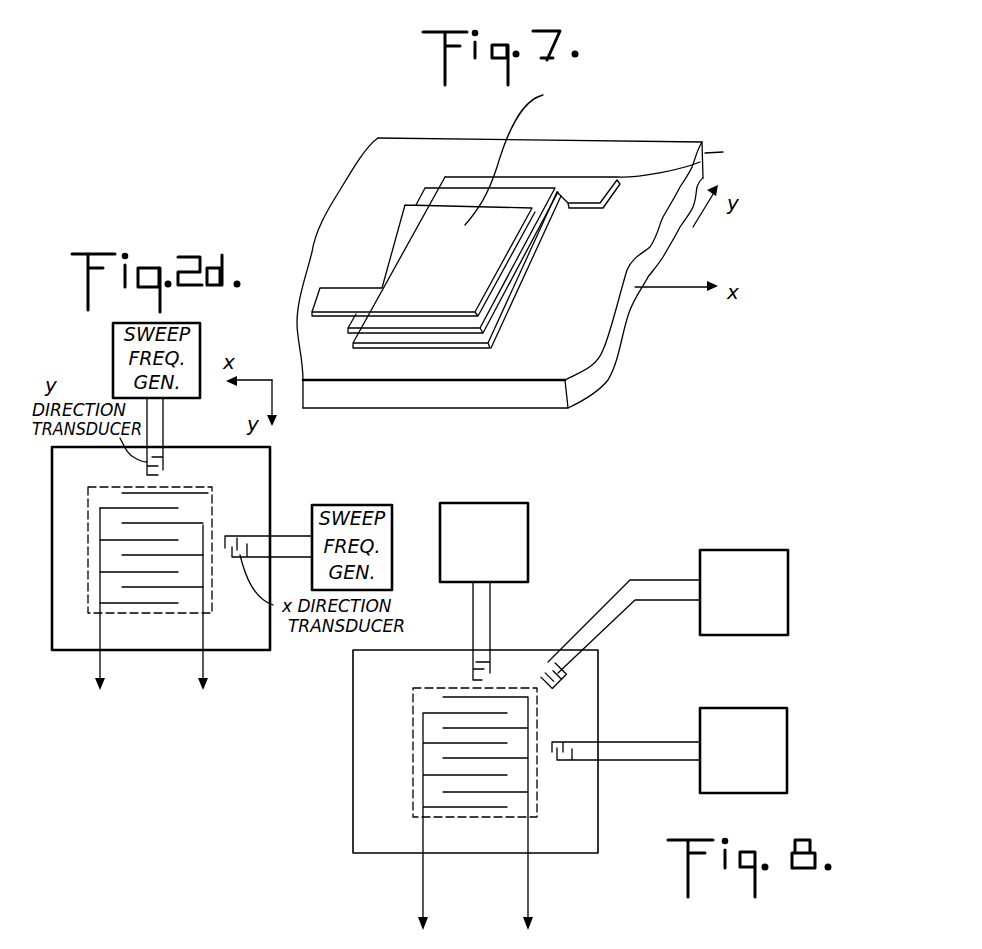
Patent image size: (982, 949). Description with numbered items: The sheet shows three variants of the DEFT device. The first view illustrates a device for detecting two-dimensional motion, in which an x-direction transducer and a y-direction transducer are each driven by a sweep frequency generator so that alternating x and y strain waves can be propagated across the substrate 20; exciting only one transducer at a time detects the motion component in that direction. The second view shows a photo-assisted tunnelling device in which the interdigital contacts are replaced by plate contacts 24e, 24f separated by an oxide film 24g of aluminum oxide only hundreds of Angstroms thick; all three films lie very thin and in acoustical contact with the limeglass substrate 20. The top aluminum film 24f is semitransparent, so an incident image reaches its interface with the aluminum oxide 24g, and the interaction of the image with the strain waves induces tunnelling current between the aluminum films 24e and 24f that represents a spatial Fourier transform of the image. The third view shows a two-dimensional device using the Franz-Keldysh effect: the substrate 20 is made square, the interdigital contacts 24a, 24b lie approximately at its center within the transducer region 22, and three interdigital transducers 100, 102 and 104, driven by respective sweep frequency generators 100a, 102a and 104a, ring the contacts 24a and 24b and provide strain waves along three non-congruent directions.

In FIG. 7, the substrate 20 is at (703, 178).
In FIG. 8, the substrate 20 is at (533, 660).
In FIG. 8, the interdigital transducer region 22 is at (413, 757).
In FIG. 8, the interdigital contact 24a is at (528, 897).
In FIG. 8, the interdigital contact 24b is at (423, 897).
In FIG. 7, the plate contact 24e is at (585, 191).
In FIG. 7, the top aluminum film 24f is at (330, 298).
In FIG. 7, the oxide film 24g is at (515, 200).
In FIG. 8, the interdigital transducer 100 is at (473, 662).
In FIG. 8, the sweep frequency generator 100a is at (523, 528).
In FIG. 8, the interdigital transducer 102 is at (557, 673).
In FIG. 8, the sweep frequency generator 102a is at (762, 552).
In FIG. 8, the interdigital transducer 104 is at (563, 743).
In FIG. 8, the sweep frequency generator 104a is at (788, 714).